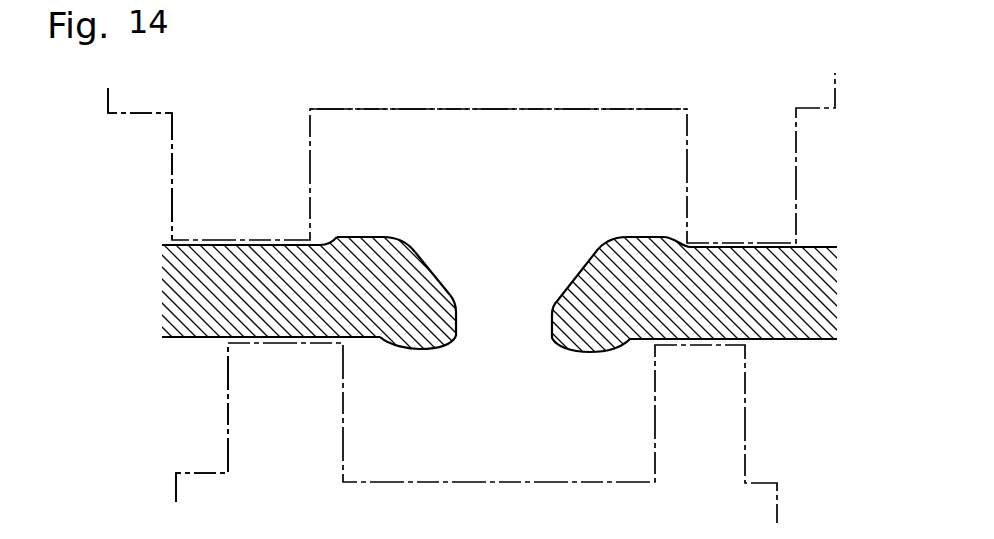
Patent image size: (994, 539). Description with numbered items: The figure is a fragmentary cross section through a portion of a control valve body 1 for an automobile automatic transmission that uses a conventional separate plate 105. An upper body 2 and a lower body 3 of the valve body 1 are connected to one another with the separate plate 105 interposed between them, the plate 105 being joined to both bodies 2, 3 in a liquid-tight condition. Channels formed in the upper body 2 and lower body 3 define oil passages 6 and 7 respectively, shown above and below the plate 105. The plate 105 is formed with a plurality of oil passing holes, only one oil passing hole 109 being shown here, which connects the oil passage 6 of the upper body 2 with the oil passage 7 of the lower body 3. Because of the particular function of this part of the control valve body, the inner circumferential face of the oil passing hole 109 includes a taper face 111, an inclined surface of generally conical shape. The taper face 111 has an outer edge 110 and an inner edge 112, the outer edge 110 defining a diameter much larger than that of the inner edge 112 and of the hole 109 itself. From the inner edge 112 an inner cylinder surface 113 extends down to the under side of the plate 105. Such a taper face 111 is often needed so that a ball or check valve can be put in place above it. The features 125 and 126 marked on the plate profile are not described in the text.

The valve body 1 is at (474, 99).
The upper body 2 is at (171, 136).
The lower body 3 is at (226, 438).
The oil passage 6 is at (548, 133).
The oil passage 7 is at (508, 463).
The separate plate 105 is at (160, 281).
The oil passing hole 109 is at (558, 254).
The outer edge 110 is at (392, 240).
The taper face 111 is at (422, 262).
The inner edge 112 is at (458, 306).
The inner cylinder surface 113 is at (459, 329).
The rising portion of projection 125 is at (372, 232).
The foot portion of projection 126 is at (417, 348).